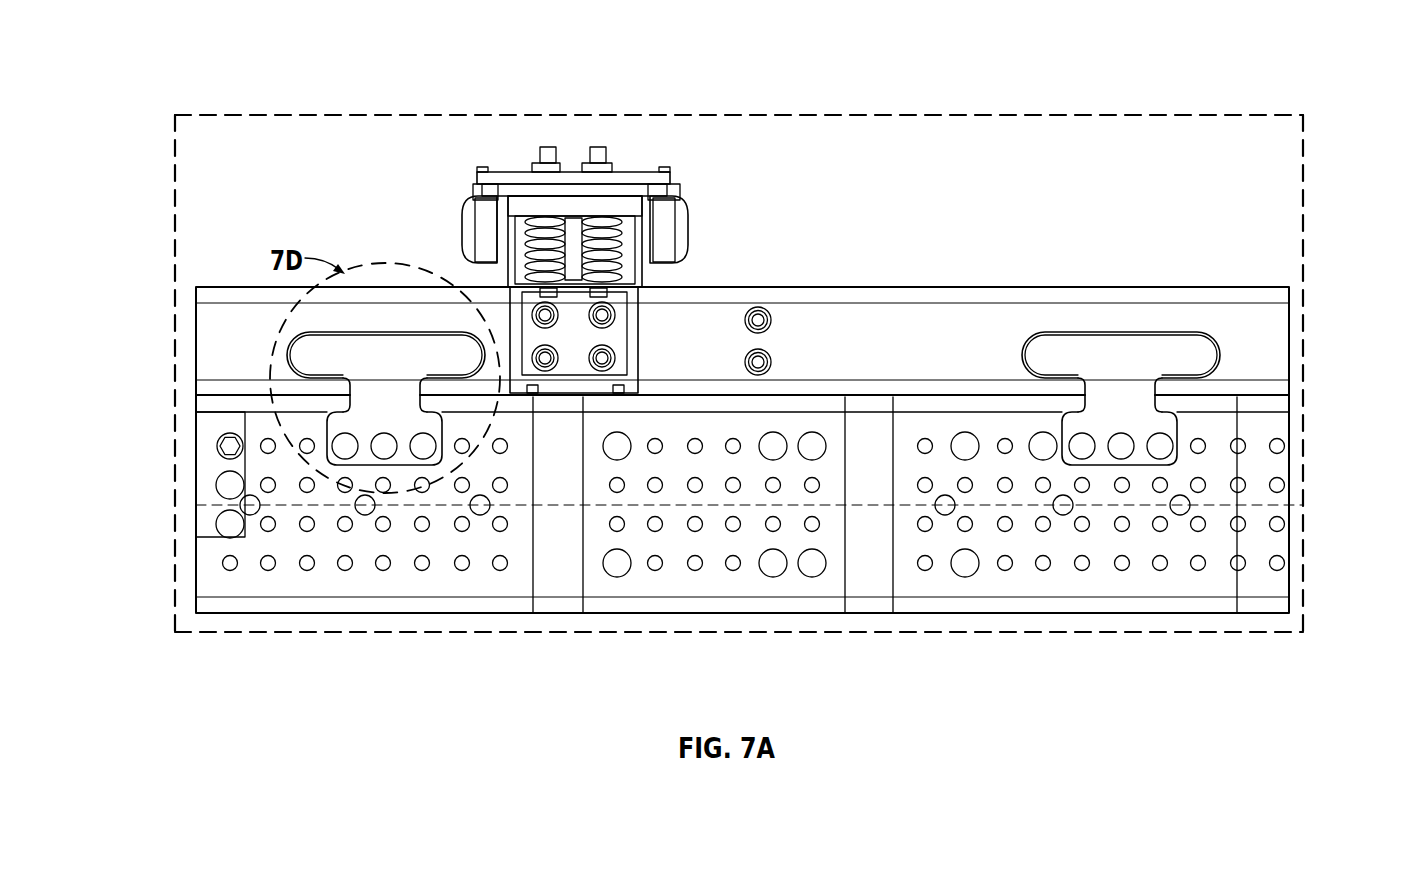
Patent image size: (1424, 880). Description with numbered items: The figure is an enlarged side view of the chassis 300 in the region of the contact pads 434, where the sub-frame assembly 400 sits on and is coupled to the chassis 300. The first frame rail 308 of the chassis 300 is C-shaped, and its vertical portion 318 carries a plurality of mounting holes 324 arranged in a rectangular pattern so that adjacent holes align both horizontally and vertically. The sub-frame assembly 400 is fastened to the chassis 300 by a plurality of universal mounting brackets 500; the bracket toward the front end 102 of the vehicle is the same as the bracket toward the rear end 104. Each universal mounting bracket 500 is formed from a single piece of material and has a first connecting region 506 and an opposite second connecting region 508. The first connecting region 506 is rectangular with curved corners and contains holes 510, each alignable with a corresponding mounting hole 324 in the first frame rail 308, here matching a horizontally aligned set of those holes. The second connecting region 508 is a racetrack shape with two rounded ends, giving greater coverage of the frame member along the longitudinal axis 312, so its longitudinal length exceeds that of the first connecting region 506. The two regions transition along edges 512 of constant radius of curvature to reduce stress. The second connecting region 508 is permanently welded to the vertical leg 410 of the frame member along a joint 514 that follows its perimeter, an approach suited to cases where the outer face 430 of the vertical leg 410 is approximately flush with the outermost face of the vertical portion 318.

The chassis 300 is at (306, 64).
The front end 102 is at (160, 318).
The rear end 104 is at (1326, 465).
The first frame rail 308 is at (734, 624).
The longitudinal axis 312 is at (495, 515).
The vertical portion 318 is at (568, 582).
The holes 324 is at (345, 571).
The sub-frame assembly 400 is at (904, 278).
The vertical leg 410 is at (1277, 320).
The outer face 430 is at (1217, 318).
The contact pads 434 is at (625, 180).
The universal mounting brackets 500 is at (737, 460).
The first connecting region 506 is at (328, 423).
The second connecting region 508 is at (293, 362).
The holes 510 is at (327, 448).
The edges 512 is at (500, 400).
The joint 514 is at (1150, 333).